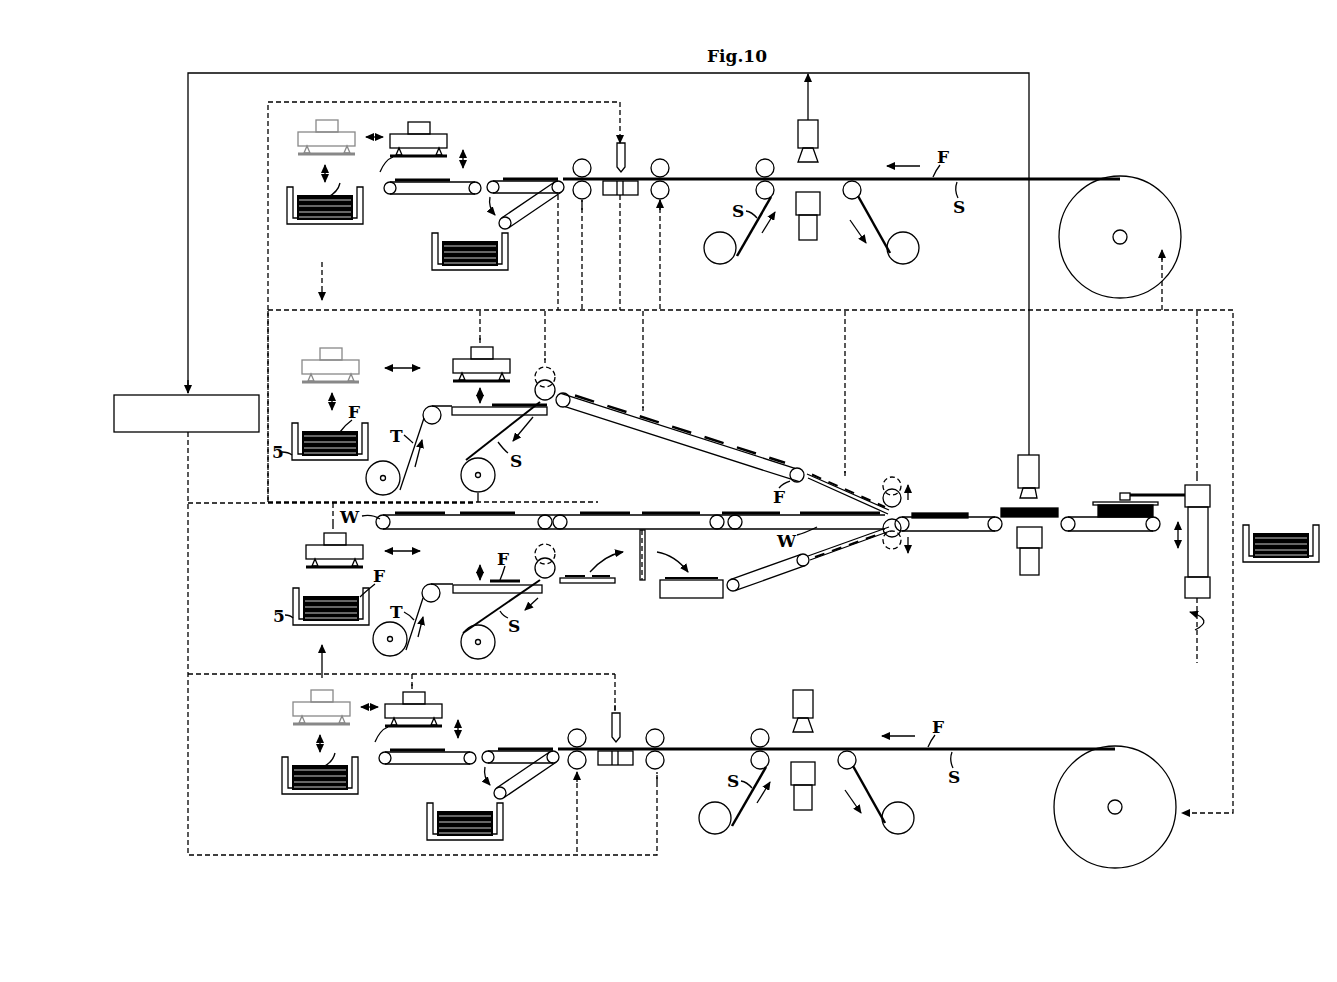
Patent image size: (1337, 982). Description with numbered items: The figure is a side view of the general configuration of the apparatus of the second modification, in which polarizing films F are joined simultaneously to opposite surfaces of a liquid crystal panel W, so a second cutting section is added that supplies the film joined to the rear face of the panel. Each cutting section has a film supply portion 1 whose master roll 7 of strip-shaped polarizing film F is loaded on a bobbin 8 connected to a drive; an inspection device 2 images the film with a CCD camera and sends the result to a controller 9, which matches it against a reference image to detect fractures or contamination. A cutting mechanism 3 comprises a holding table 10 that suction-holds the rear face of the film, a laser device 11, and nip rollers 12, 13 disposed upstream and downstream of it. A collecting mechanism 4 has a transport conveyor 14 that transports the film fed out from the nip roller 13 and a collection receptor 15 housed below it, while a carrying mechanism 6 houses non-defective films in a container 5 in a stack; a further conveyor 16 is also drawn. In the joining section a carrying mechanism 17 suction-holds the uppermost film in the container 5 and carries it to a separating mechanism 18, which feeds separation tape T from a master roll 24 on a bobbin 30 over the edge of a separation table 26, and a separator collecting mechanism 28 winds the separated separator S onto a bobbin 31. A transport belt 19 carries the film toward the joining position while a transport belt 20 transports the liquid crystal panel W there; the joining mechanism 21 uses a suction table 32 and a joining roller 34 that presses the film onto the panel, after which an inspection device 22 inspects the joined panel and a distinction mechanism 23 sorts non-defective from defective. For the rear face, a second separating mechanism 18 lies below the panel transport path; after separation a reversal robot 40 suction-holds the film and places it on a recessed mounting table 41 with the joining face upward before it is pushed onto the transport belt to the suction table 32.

The film supply portion 1 is at (1130, 211).
The inspection device 2 is at (823, 196).
The cutting mechanism 3 is at (703, 173).
The collecting mechanism 4 is at (529, 168).
The container 5 is at (363, 214).
The carrying mechanism 6 is at (405, 124).
The master roll 7 is at (1177, 211).
The bobbin 8 is at (1126, 233).
The controller 9 is at (140, 395).
The holding table 10 is at (632, 196).
The laser device 11 is at (626, 152).
The nip roller 12 is at (665, 185).
The nip roller 13 is at (589, 183).
The transport conveyor 14 is at (488, 196).
The collection receptor 15 is at (432, 250).
The conveyor 16 is at (433, 194).
The carrying mechanism 17 is at (465, 348).
The separating mechanism 18 is at (549, 416).
The transport belt 19 is at (653, 422).
The transport belt 20 is at (598, 512).
The joining mechanism 21 is at (856, 467).
The inspection device 22 is at (1040, 530).
The distinction mechanism 23 is at (1100, 502).
The master roll 24 is at (368, 481).
The separation table 26 is at (472, 416).
The separator collecting mechanism 28 is at (500, 477).
The bobbin 30 is at (394, 483).
The bobbin 31 is at (473, 471).
The suction table 32 is at (834, 477).
The joining roller 34 is at (897, 486).
The reversal robot 40 is at (575, 578).
The mounting table 41 is at (693, 599).